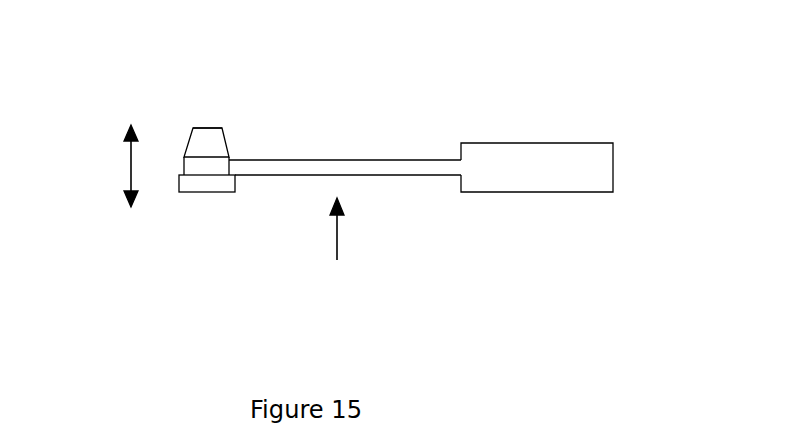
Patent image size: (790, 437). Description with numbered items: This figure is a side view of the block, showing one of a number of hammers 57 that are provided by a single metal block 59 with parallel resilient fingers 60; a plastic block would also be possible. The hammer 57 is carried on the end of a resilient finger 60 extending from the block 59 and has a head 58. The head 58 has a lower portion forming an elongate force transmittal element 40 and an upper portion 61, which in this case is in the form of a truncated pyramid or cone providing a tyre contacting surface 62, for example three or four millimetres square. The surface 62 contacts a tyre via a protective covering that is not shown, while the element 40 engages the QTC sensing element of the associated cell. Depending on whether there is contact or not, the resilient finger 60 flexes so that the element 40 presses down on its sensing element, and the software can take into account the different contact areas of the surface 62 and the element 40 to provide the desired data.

The head 58 is at (163, 111).
The tyre contacting surface 62 is at (208, 125).
The upper portion 61 is at (218, 142).
The elongate force transmittal element 40 is at (203, 207).
The resilient finger 60 is at (413, 175).
The metal block 59 is at (578, 175).
The hammer 57 is at (331, 256).